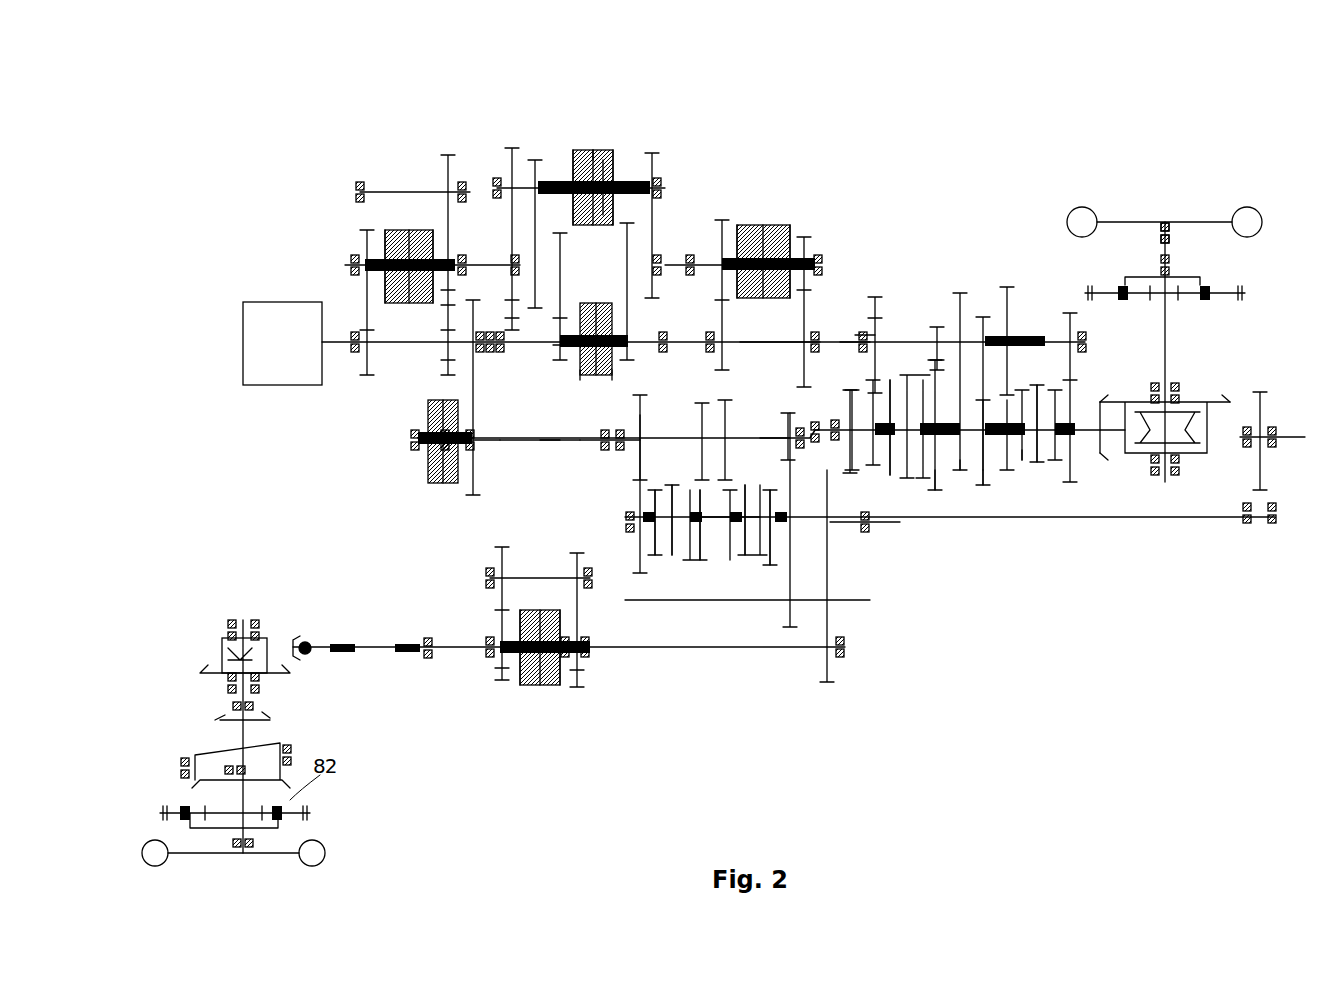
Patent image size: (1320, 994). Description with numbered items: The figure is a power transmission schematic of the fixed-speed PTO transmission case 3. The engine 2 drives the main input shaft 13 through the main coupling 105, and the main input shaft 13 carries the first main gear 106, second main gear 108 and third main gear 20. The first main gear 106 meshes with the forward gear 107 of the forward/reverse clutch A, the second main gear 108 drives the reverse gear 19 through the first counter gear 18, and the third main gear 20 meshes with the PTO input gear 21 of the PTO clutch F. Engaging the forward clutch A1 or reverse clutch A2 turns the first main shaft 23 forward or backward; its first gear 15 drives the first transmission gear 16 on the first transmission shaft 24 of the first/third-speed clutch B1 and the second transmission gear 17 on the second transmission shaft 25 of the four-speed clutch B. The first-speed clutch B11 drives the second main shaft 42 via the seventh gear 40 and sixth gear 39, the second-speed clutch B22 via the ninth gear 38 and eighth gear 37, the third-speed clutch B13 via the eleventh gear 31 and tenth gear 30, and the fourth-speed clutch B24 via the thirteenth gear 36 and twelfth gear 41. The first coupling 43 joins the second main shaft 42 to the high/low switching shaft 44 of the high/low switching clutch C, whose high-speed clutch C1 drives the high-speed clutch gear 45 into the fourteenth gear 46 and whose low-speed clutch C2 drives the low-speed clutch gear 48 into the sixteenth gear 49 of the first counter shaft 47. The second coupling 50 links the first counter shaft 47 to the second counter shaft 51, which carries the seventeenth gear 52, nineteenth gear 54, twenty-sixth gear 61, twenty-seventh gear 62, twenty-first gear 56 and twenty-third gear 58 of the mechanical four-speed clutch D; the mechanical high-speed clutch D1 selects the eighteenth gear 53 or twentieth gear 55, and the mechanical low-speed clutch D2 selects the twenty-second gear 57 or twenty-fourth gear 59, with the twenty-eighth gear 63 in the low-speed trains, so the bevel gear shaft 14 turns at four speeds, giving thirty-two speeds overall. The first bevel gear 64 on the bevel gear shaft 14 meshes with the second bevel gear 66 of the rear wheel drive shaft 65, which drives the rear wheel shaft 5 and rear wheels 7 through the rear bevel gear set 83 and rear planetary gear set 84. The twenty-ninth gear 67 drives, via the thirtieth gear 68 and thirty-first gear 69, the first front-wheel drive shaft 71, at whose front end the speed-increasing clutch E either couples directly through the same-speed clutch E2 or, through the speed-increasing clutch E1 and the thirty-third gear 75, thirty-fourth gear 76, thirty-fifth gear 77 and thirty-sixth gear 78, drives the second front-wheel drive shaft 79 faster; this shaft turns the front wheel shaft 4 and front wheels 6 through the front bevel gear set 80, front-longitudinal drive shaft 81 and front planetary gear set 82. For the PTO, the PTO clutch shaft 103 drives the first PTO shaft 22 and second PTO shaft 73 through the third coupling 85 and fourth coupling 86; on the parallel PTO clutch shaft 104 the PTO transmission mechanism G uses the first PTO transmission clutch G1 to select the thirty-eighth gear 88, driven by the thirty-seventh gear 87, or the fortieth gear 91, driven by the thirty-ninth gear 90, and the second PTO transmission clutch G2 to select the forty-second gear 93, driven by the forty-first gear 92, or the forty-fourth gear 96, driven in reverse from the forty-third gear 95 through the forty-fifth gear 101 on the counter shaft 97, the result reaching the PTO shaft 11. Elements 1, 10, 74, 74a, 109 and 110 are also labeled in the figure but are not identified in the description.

The front drive shaft coupling 1 is at (300, 636).
The engine 2 is at (262, 302).
The transmission case 3 is at (940, 119).
The front wheel shaft 4 is at (243, 855).
The rear wheel shaft 5 is at (1172, 238).
The front wheels 6 is at (320, 848).
The rear wheels 7 is at (1090, 208).
The gear 10 is at (827, 682).
The PTO shaft 11 is at (1270, 445).
The main input shaft 13 is at (404, 344).
The bevel gear shaft 14 is at (1070, 425).
The first gear 15 is at (505, 300).
The first transmission gear 16 is at (508, 150).
The second transmission gear 17 is at (558, 370).
The first counter gear 18 is at (446, 170).
The reverse gear 19 is at (436, 302).
The third main gear 20 is at (506, 335).
The PTO input gear 21 is at (478, 408).
The first PTO shaft 22 is at (550, 436).
The first main shaft 23 is at (466, 255).
The first transmission shaft 24 is at (610, 172).
The second transmission shaft 25 is at (556, 345).
The tenth gear 30 is at (522, 264).
The eleventh gear 31 is at (537, 160).
The thirteenth gear 36 is at (552, 325).
The eighth gear 37 is at (625, 255).
The ninth gear 38 is at (655, 345).
The sixth gear 39 is at (660, 250).
The seventh gear 40 is at (655, 165).
The twelfth gear 41 is at (561, 262).
The second main shaft 42 is at (597, 303).
The first coupling 43 is at (688, 258).
The high/low switching shaft 44 is at (803, 240).
The high-speed clutch gear 45 is at (724, 222).
The fourteenth gear 46 is at (726, 330).
The first counter shaft 47 is at (762, 346).
The low-speed clutch gear 48 is at (822, 255).
The sixteenth gear 49 is at (798, 322).
The second coupling 50 is at (850, 340).
The second counter shaft 51 is at (878, 300).
The seventeenth gear 52 is at (876, 300).
The eighteenth gear 53 is at (865, 345).
The nineteenth gear 54 is at (937, 325).
The twentieth gear 55 is at (940, 480).
The twenty-first gear 56 is at (1010, 300).
The twenty-second gear 57 is at (1023, 462).
The twenty-third gear 58 is at (1068, 315).
The twenty-fourth gear 59 is at (1072, 470).
The twenty-sixth gear 61 is at (960, 293).
The twenty-seventh gear 62 is at (1005, 290).
The twenty-eighth gear 63 is at (990, 470).
The first bevel gear 64 is at (1110, 455).
The rear wheel drive shaft 65 is at (1167, 334).
The second bevel gear 66 is at (1120, 400).
The twenty-ninth gear 67 is at (845, 400).
The thirtieth gear 68 is at (870, 530).
The thirty-first gear 69 is at (818, 475).
The first front-wheel drive shaft 71 is at (712, 649).
The second PTO shaft 73 is at (648, 440).
The shaft 74 is at (1115, 519).
The shaft portion 74a is at (880, 522).
The thirty-third gear 75 is at (582, 680).
The thirty-fourth gear 76 is at (575, 555).
The thirty-fifth gear 77 is at (498, 672).
The thirty-sixth gear 78 is at (500, 552).
The second front-wheel drive shaft 79 is at (488, 640).
The front bevel gear set 80 is at (225, 638).
The front-longitudinal drive shaft 81 is at (220, 752).
The front planetary gear set 82 is at (600, 436).
The rear bevel gear set 83 is at (1190, 400).
The rear planetary gear set 84 is at (1222, 290).
The third coupling 85 is at (505, 448).
The fourth coupling 86 is at (618, 430).
The thirty-seventh gear 87 is at (622, 450).
The thirty-eighth gear 88 is at (635, 556).
The thirty-ninth gear 90 is at (700, 452).
The fortieth gear 91 is at (676, 560).
The forty-first gear 92 is at (730, 430).
The forty-second gear 93 is at (704, 560).
The forty-third gear 95 is at (785, 420).
The forty-fourth gear 96 is at (760, 550).
The counter shaft 97 is at (688, 600).
The forty-fifth gear 101 is at (788, 616).
The PTO clutch shaft 103 is at (478, 458).
The PTO clutch shaft 104 is at (750, 500).
The main coupling 105 is at (350, 265).
The first main gear 106 is at (367, 380).
The forward gear 107 is at (365, 240).
The second main gear 108 is at (440, 355).
The shaft 109 is at (628, 600).
The bearing 110 is at (848, 650).
The forward/reverse clutch A is at (409, 232).
The forward clutch A1 is at (395, 230).
The reverse clutch A2 is at (423, 230).
The four-speed clutch B is at (614, 124).
The first/third-speed clutch B1 is at (593, 148).
The first-speed clutch B11 is at (615, 150).
The third-speed clutch B13 is at (575, 150).
The second-speed clutch B22 is at (614, 380).
The fourth-speed clutch B24 is at (582, 380).
The high/low switching clutch C is at (775, 140).
The high-speed clutch C1 is at (752, 222).
The low-speed clutch C2 is at (786, 222).
The mechanical four-speed clutch D is at (1018, 480).
The mechanical high-speed clutch D1 is at (905, 480).
The mechanical low-speed clutch D2 is at (1040, 470).
The speed-increasing clutch E is at (580, 738).
The speed-increasing clutch E1 is at (528, 690).
The same-speed clutch E2 is at (557, 690).
The PTO clutch F is at (420, 490).
The PTO transmission mechanism G is at (642, 650).
The first PTO transmission clutch G1 is at (648, 600).
The second PTO transmission clutch G2 is at (735, 600).